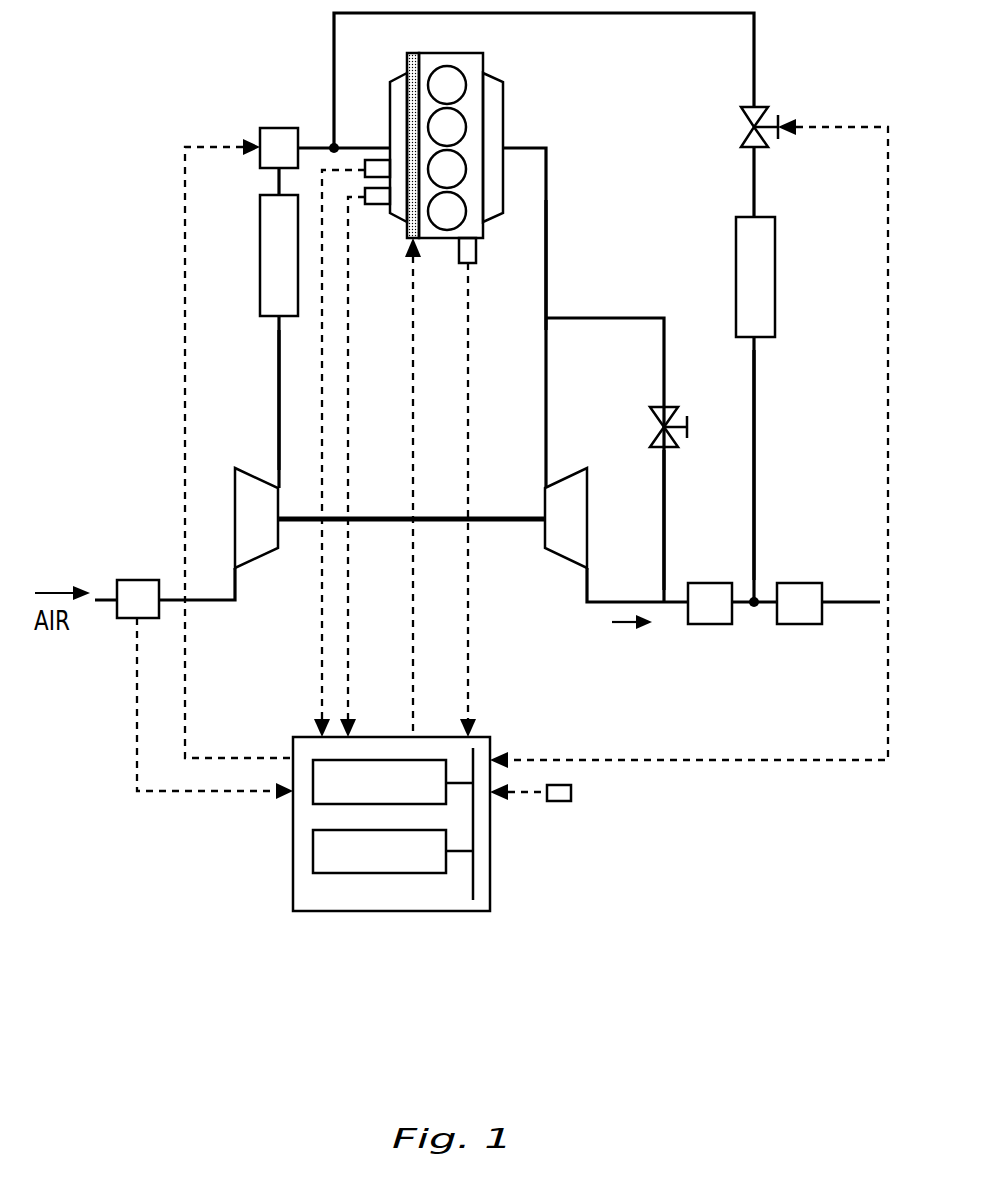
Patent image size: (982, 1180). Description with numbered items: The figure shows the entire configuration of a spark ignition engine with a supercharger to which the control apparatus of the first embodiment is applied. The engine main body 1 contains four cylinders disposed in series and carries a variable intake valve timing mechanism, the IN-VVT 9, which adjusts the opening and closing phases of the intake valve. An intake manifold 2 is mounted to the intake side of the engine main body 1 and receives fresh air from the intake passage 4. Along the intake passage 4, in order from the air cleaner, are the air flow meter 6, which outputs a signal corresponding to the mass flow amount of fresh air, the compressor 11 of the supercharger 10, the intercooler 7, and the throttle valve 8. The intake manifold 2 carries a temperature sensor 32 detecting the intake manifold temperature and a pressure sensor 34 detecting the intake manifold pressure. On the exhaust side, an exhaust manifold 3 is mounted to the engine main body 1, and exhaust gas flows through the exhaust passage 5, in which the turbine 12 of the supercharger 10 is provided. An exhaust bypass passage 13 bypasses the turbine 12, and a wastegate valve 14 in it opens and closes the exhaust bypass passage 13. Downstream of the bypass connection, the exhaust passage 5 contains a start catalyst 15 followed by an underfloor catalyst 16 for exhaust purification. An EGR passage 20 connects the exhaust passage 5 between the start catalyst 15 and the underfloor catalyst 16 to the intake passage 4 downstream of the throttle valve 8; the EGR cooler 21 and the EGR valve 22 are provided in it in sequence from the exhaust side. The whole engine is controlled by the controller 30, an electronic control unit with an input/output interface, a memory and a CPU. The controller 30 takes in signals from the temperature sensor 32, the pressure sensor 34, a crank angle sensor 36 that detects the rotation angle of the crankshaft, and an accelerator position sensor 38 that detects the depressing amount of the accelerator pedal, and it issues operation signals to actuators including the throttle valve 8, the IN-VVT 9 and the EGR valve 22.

The engine main body 1 is at (483, 58).
The intake manifold 2 is at (390, 80).
The exhaust manifold 3 is at (503, 108).
The intake passage 4 is at (278, 368).
The exhaust passage 5 is at (546, 212).
The air flow meter 6 is at (134, 580).
The intercooler 7 is at (260, 242).
The throttle valve 8 is at (280, 128).
The variable intake valve timing mechanism (IN-VVT) 9 is at (410, 54).
The supercharger 10 is at (385, 525).
The compressor 11 is at (260, 560).
The turbine 12 is at (565, 566).
The exhaust bypass passage 13 is at (664, 503).
The wastegate valve 14 is at (665, 407).
The start catalyst (S/C) 15 is at (710, 625).
The underfloor catalyst (U/F) 16 is at (797, 625).
The EGR passage 20 is at (754, 405).
The EGR cooler 21 is at (775, 280).
The EGR valve 22 is at (765, 145).
The controller (ECU) 30 is at (390, 912).
The temperature sensor 32 is at (377, 204).
The pressure sensor 34 is at (378, 160).
The crank angle sensor 36 is at (478, 263).
The accelerator position sensor 38 is at (571, 792).